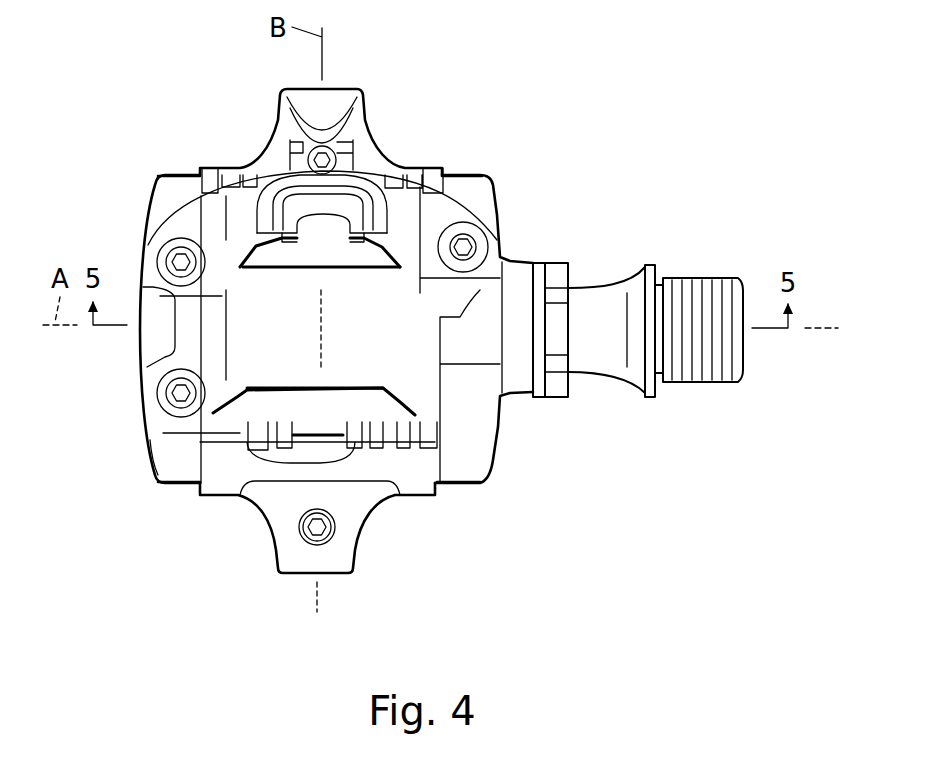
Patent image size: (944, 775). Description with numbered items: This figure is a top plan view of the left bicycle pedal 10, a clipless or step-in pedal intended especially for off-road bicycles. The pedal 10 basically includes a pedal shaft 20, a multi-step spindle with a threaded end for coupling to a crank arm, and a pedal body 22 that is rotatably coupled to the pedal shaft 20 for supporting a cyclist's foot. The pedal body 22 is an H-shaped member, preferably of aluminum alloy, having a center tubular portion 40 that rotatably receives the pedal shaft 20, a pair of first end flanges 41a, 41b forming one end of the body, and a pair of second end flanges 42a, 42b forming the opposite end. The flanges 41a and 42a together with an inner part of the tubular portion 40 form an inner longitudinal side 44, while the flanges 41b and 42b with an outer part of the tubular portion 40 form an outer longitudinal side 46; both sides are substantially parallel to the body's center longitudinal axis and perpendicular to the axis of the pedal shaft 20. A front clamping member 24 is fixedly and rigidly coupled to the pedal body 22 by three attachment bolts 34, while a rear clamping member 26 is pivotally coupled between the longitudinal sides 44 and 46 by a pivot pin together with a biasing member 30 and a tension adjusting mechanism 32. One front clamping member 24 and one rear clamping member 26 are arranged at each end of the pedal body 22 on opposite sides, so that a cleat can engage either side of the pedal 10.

The bicycle pedal 10 is at (593, 159).
The pedal shaft 20 is at (652, 258).
The pedal body 22 is at (143, 198).
The front clamping member 24 is at (384, 169).
The rear clamping member 26 is at (352, 85).
The biasing member 30 is at (297, 227).
The tension adjusting mechanism 32 is at (291, 138).
The attachment bolt 34 is at (157, 257).
The center tubular portion 40 is at (255, 333).
The first end flange 41a is at (464, 170).
The first end flange 41b is at (180, 170).
The second end flange 42a is at (459, 488).
The second end flange 42b is at (176, 488).
The inner longitudinal side 44 is at (504, 440).
The outer longitudinal side 46 is at (143, 444).